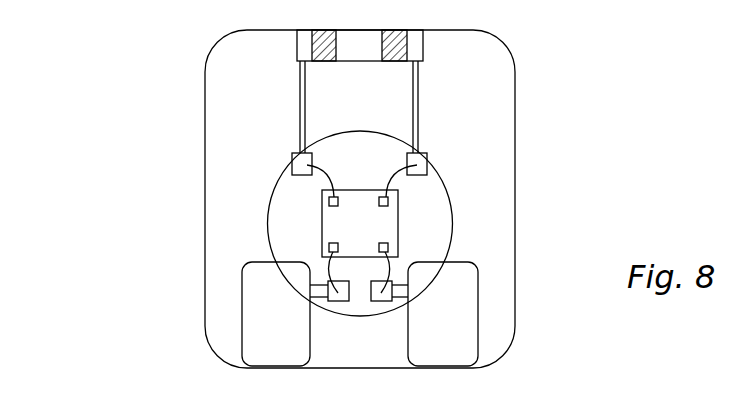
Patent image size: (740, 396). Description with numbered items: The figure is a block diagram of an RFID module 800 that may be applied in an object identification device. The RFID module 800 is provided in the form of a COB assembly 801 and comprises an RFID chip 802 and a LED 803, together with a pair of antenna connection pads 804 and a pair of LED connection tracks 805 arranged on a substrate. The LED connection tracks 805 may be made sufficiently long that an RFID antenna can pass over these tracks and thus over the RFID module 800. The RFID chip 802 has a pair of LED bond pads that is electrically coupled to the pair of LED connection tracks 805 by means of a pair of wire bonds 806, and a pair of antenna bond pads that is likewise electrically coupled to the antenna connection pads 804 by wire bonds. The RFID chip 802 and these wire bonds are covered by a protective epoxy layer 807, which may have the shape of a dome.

The RFID module 800 is at (62, 58).
The COB assembly 801 is at (227, 113).
The RFID chip 802 is at (383, 227).
The LED 803 is at (415, 43).
The antenna connection pads 804 is at (255, 323).
The LED connection tracks 805 is at (418, 92).
The wire bonds 806 is at (380, 173).
The protective epoxy layer 807 is at (270, 230).